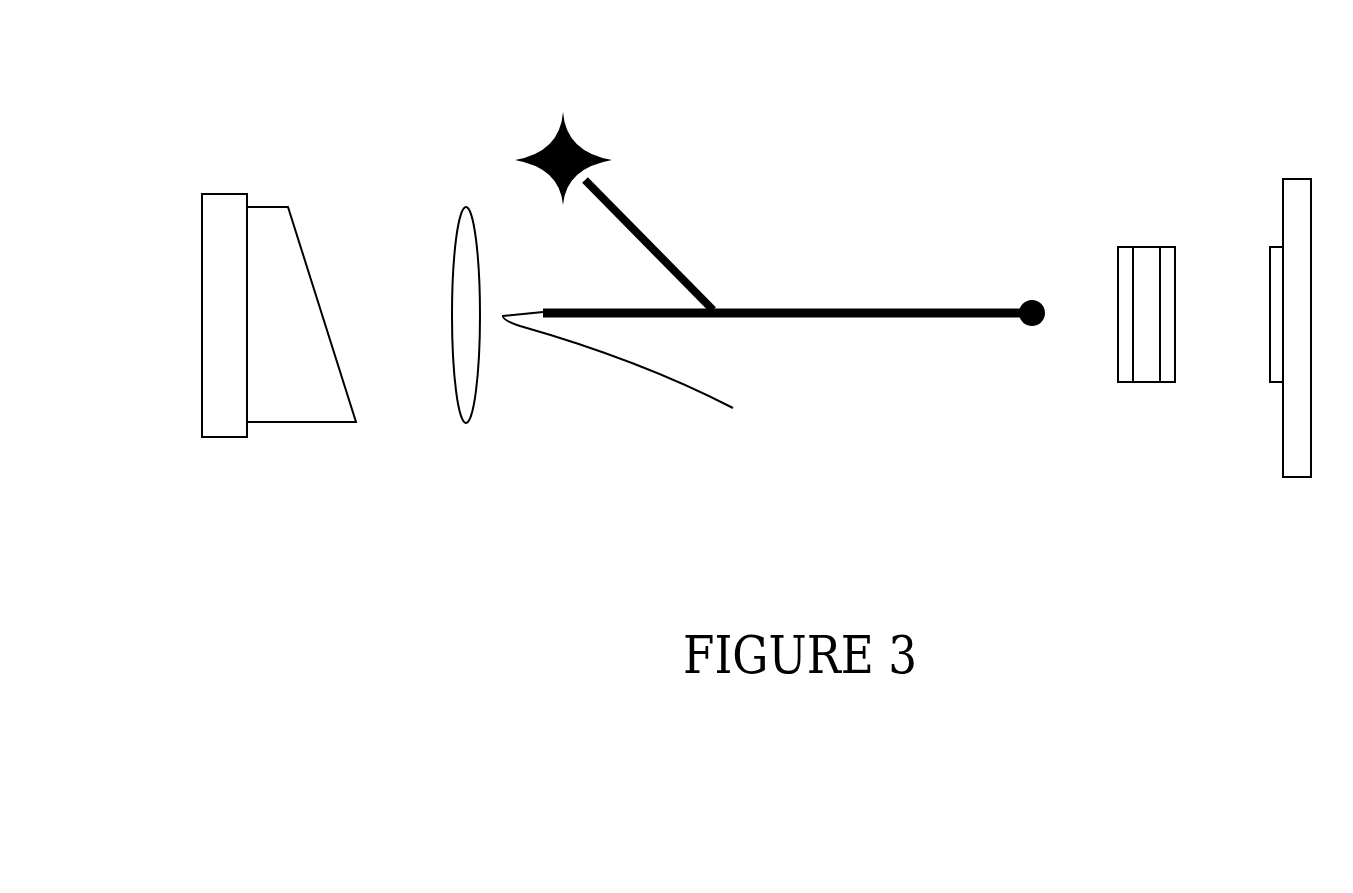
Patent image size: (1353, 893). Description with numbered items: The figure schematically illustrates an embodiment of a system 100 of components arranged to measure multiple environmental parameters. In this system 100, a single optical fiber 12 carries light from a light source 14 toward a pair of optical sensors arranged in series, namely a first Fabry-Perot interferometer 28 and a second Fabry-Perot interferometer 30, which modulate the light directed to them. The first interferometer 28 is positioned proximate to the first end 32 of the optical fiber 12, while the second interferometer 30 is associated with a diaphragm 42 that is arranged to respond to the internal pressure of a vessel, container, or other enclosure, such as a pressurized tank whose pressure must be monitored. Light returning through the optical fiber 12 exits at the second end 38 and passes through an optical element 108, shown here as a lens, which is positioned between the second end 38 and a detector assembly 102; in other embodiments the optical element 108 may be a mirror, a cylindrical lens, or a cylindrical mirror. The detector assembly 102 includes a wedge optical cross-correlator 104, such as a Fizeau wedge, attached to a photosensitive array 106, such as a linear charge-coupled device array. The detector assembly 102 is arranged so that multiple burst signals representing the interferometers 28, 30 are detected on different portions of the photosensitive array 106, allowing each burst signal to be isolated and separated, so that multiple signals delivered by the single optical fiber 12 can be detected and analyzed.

The system 100 is at (452, 545).
The detector assembly 102 is at (218, 150).
The wedge optical cross-correlator 104 is at (284, 247).
The photosensitive array 106 is at (230, 420).
The optical element 108 is at (460, 367).
The light source 14 is at (573, 150).
The optical fiber 12 is at (888, 307).
The first end 32 is at (1047, 313).
The second end 38 is at (637, 376).
The first Fabry-Perot interferometer 28 is at (1135, 425).
The second Fabry-Perot interferometer 30 is at (1227, 383).
The diaphragm 42 is at (1293, 190).